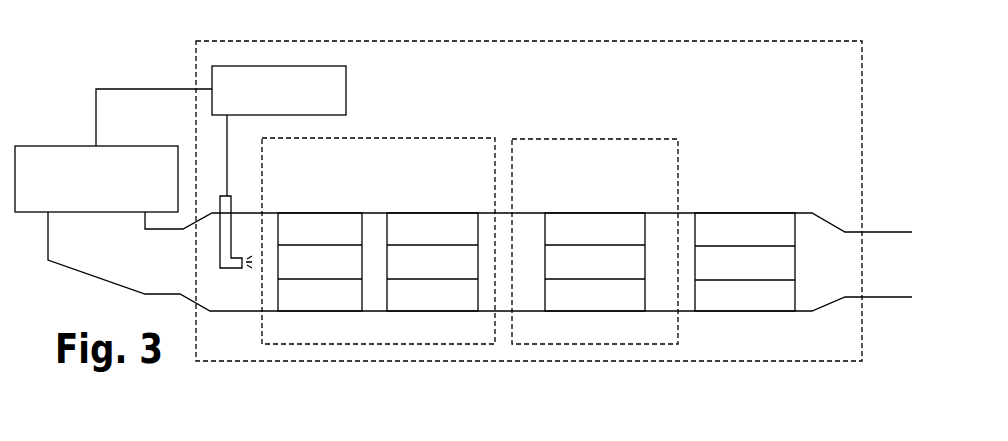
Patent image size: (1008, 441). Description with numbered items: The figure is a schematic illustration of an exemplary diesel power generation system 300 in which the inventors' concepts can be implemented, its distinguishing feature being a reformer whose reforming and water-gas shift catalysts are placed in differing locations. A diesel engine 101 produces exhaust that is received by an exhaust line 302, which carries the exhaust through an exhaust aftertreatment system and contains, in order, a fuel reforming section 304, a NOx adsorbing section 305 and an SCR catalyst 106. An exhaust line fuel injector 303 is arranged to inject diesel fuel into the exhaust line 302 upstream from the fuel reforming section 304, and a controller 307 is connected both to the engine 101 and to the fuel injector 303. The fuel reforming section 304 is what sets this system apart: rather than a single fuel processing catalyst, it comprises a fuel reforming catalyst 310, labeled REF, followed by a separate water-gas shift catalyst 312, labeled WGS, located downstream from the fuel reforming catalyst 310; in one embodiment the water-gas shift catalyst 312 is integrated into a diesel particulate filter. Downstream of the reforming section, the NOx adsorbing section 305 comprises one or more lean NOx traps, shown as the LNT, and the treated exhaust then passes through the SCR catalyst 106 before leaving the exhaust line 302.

The power generation system 300 is at (162, 55).
The diesel engine 101 is at (88, 143).
The controller 307 is at (304, 66).
The exhaust line fuel injector 303 is at (226, 195).
The exhaust line 302 is at (273, 312).
The fuel reforming section 304 is at (420, 138).
The fuel reforming catalyst 310 is at (312, 312).
The water-gas shift catalyst 312 is at (432, 312).
The NOx adsorbing section 305 is at (610, 138).
The SCR catalyst 106 is at (737, 213).